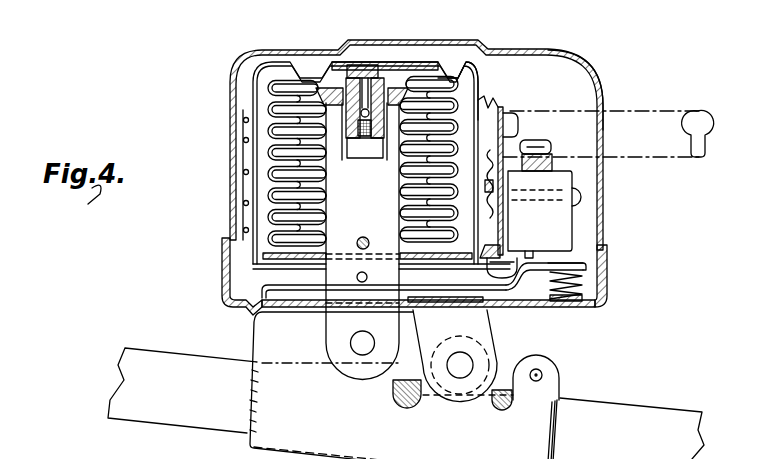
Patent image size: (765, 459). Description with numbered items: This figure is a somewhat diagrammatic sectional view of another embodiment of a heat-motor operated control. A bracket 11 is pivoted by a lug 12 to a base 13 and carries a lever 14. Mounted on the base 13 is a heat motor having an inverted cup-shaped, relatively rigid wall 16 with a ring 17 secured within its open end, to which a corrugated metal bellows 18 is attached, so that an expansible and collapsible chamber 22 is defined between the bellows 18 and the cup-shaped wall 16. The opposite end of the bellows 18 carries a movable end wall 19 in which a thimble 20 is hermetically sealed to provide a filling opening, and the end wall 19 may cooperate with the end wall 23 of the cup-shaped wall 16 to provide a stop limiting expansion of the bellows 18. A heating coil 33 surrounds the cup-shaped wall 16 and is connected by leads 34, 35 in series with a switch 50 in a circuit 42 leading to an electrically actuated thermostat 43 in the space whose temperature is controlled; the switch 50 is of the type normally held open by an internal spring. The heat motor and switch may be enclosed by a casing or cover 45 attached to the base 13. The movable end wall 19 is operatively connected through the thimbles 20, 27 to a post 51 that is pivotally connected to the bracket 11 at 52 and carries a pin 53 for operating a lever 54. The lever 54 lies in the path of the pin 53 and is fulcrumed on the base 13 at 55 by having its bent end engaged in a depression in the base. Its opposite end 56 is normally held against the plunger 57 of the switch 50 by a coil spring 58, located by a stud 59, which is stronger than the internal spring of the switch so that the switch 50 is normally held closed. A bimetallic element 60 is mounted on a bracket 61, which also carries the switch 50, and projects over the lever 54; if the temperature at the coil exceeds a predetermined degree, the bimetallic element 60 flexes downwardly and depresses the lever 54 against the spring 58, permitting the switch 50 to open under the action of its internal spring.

The bracket 11 is at (272, 406).
The lug 12 is at (482, 327).
The base 13 is at (606, 305).
The lever 14 is at (142, 410).
The cup-shaped wall 16 is at (261, 62).
The ring 17 is at (232, 238).
The bellows 18 is at (268, 168).
The end wall 19 is at (438, 72).
The thimble 20 is at (402, 76).
The chamber 22 is at (287, 72).
The end wall 23 is at (366, 68).
The thimble 27 is at (336, 88).
The heating coil 33 is at (244, 120).
The lead 34 is at (502, 116).
The lead 35 is at (483, 212).
The circuit 42 is at (665, 111).
The thermostat 43 is at (705, 125).
The cover 45 is at (585, 63).
The switch 50 is at (577, 202).
The post 51 is at (339, 219).
The pivotal connection 52 is at (364, 356).
The pin 53 is at (367, 237).
The lever 54 is at (287, 286).
The fulcrum 55 is at (250, 306).
The opposite end 56 is at (573, 263).
The plunger 57 is at (543, 243).
The coil spring 58 is at (582, 279).
The stud 59 is at (563, 310).
The bimetallic element 60 is at (497, 256).
The bracket 61 is at (510, 152).